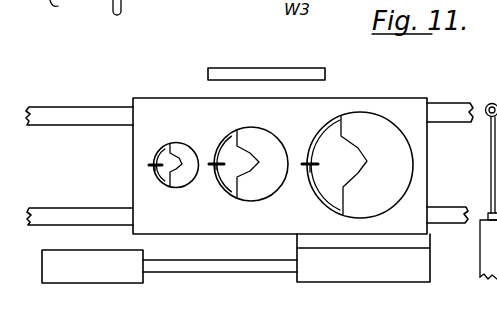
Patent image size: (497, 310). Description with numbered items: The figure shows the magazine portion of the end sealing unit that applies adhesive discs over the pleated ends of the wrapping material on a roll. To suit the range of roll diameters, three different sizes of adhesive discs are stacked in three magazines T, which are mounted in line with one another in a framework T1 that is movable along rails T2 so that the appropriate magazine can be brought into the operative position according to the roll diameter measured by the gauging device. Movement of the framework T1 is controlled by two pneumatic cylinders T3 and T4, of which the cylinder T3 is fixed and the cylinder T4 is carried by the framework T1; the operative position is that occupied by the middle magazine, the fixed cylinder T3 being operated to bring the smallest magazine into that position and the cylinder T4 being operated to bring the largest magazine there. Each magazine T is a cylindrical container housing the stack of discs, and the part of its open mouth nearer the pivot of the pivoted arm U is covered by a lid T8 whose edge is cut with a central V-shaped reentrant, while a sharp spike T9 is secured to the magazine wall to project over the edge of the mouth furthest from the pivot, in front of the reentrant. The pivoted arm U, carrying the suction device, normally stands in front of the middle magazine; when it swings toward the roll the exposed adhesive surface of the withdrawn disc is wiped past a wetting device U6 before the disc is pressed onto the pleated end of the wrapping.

The magazine T is at (341, 113).
The framework T1 is at (137, 146).
The rails T2 is at (43, 127).
The pneumatic cylinder T3 is at (169, 266).
The pneumatic cylinder T4 is at (363, 258).
The lid T8 is at (177, 175).
The spike T9 is at (150, 168).
The wetting device U6 is at (314, 74).
The pivoted arm U is at (488, 175).